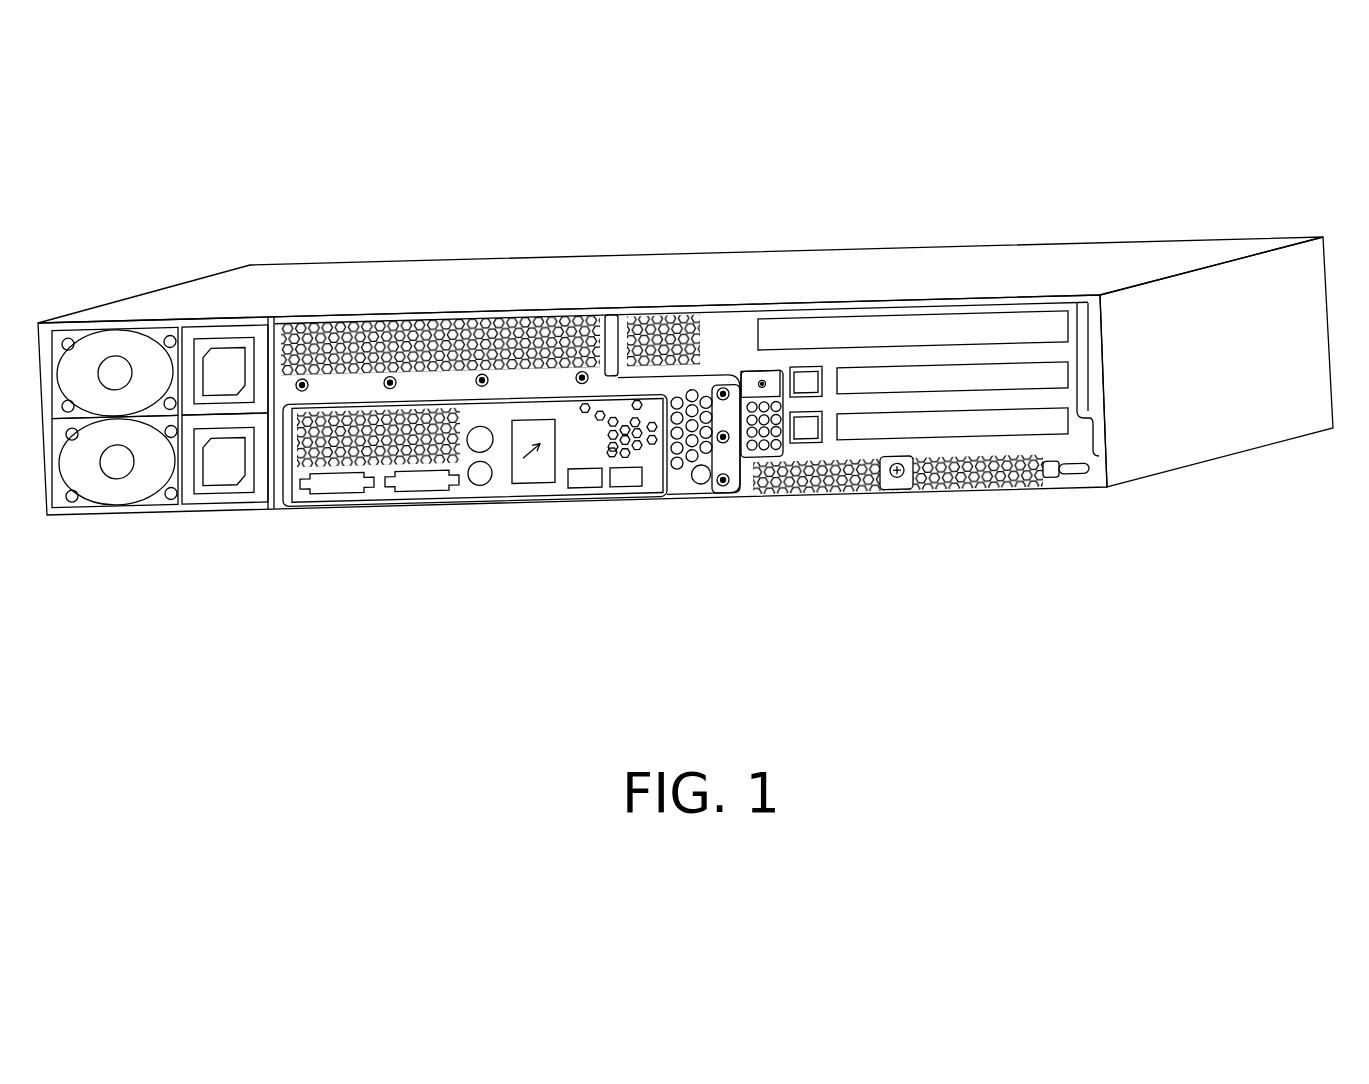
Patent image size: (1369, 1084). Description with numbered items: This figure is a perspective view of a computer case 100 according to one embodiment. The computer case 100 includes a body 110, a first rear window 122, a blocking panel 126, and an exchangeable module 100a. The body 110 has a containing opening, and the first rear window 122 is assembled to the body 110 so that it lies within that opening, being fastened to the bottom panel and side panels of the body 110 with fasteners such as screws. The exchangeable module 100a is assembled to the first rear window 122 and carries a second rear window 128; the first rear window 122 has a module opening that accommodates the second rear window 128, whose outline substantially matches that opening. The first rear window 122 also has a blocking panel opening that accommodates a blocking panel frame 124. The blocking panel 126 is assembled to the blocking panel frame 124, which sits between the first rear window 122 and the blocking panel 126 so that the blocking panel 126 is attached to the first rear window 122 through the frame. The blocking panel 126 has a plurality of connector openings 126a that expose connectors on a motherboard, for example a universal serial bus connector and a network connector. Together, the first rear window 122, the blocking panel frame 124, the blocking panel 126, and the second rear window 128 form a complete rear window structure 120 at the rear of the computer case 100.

The computer case 100 is at (699, 465).
The exchangeable module 100a is at (1014, 402).
The body 110 is at (1195, 418).
The rear window structure 120 is at (557, 526).
The first rear window 122 is at (743, 484).
The blocking panel frame 124 is at (680, 483).
The blocking panel 126 is at (475, 511).
The connector openings 126a is at (512, 456).
The second rear window 128 is at (786, 494).